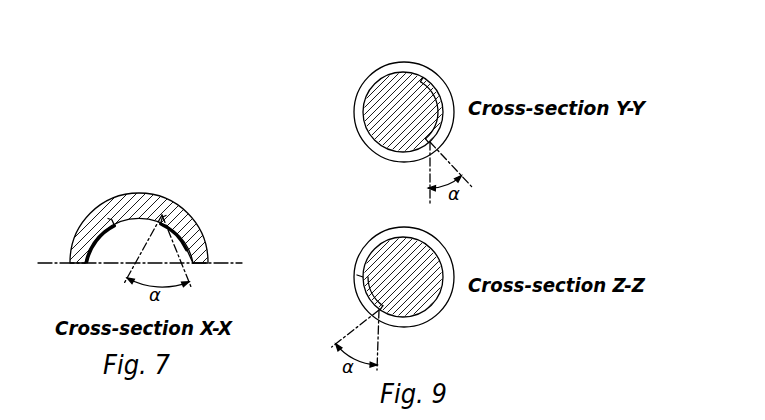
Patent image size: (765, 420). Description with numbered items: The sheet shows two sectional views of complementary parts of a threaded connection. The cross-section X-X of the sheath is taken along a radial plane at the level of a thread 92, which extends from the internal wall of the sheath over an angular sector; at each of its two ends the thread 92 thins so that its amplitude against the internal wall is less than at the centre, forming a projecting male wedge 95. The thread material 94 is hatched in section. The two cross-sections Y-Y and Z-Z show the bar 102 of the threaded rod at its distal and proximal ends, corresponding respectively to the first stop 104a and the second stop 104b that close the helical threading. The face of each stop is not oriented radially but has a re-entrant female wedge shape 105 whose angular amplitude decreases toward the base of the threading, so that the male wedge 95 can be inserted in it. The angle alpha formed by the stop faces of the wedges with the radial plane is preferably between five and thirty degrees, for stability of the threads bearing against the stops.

In FIG. 7, the thread 92 is at (125, 212).
In FIG. 7, the tubular wall 94 is at (183, 216).
In FIG. 7, the male wedge 95 is at (103, 228).
In FIG. 9, the bar 102 is at (428, 85).
In FIG. 9, the first stop 104a is at (430, 143).
In FIG. 9, the second stop 104b is at (368, 306).
In FIG. 9, the female wedge shape 105 is at (441, 142).